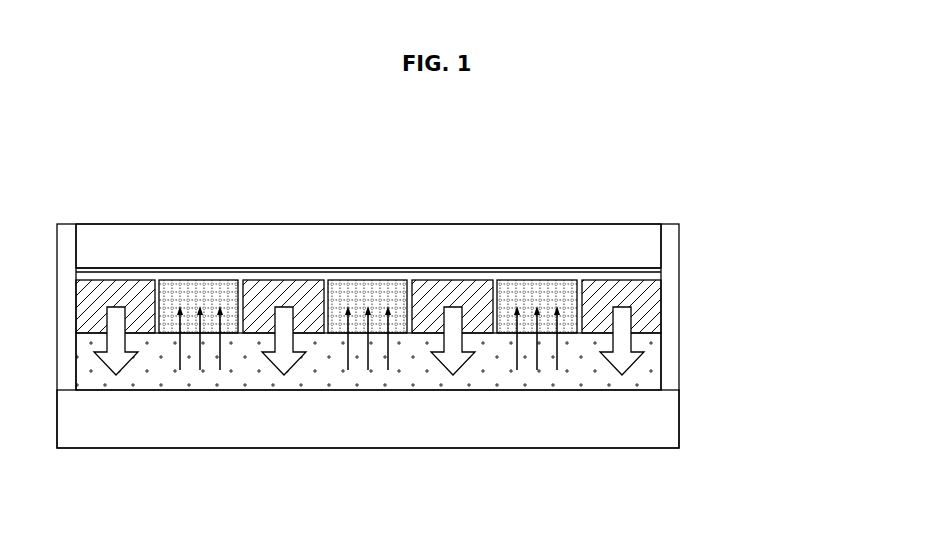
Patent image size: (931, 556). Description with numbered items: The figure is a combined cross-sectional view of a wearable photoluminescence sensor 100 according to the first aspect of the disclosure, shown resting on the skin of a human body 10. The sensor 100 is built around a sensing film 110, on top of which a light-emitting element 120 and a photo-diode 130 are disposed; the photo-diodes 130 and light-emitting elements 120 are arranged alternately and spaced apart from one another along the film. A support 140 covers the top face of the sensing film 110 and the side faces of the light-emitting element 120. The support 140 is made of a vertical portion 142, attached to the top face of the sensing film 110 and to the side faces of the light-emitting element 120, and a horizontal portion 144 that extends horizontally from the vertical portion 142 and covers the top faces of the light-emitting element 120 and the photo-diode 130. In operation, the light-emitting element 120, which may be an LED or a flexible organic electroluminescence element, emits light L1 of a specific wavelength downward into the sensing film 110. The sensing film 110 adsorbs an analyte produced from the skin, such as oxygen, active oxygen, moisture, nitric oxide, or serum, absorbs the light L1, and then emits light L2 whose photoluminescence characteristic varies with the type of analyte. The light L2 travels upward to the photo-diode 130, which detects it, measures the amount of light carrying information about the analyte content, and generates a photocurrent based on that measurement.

The wearable photoluminescence sensor 100 is at (637, 151).
The human body 10 is at (665, 419).
The sensing film 110 is at (492, 370).
The light-emitting element 120 is at (287, 290).
The photo-diode 130 is at (367, 290).
The support 140 is at (448, 295).
The vertical portion 142 is at (670, 253).
The horizontal portion 144 is at (622, 232).
The light L1 is at (640, 340).
The light L2 is at (388, 347).